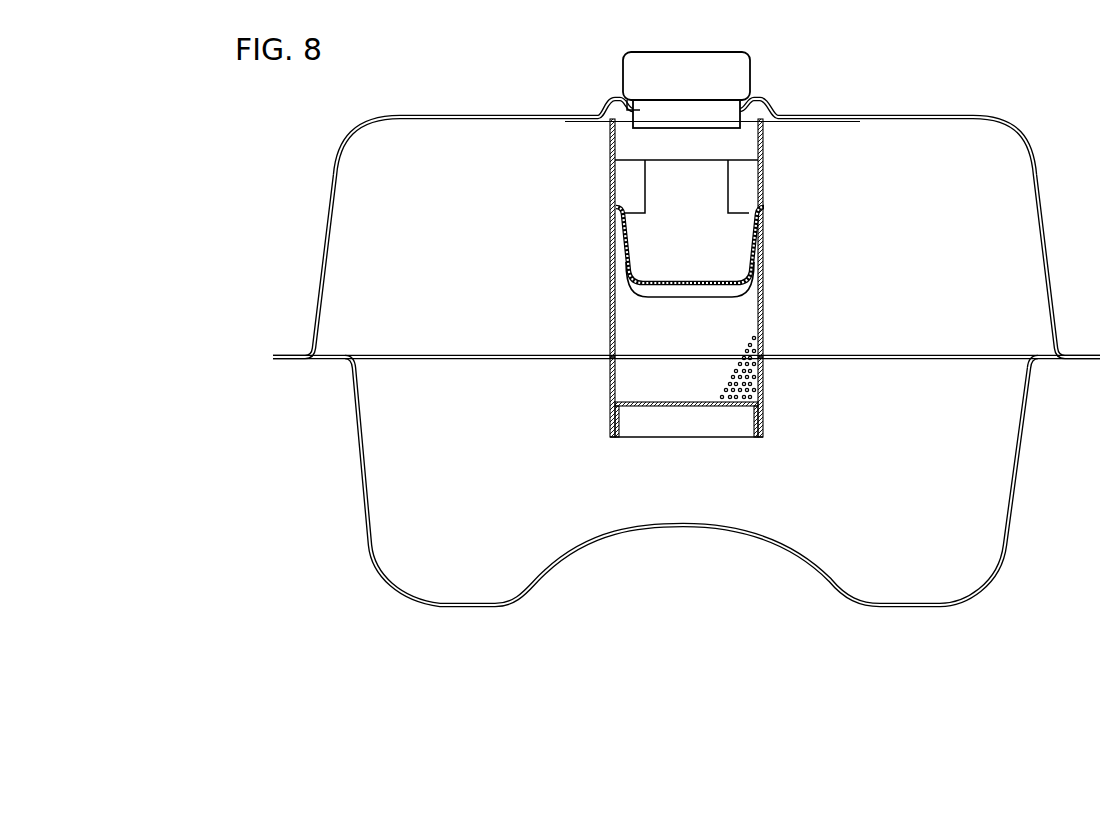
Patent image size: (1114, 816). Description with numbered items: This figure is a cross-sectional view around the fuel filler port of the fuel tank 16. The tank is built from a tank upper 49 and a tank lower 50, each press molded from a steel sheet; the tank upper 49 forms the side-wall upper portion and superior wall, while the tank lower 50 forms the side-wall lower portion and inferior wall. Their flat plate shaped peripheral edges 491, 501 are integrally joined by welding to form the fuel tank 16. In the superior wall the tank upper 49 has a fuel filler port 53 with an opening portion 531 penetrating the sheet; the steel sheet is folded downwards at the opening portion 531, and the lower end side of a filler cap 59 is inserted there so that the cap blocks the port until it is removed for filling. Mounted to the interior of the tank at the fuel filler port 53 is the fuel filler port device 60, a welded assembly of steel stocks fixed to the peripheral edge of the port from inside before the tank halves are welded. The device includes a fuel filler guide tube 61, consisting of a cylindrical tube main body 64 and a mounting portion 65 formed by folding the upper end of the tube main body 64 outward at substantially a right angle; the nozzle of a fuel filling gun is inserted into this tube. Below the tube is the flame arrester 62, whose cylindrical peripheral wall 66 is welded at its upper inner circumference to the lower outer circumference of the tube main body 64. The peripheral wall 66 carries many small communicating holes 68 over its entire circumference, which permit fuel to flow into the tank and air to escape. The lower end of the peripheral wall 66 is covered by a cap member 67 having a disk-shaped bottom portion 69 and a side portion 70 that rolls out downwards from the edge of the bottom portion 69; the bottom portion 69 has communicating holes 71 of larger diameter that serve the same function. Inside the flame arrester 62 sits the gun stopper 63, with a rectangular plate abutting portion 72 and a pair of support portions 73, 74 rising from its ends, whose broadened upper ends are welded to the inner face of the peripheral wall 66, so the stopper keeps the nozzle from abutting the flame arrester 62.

The fuel tank 16 is at (693, 306).
The tank upper 49 is at (1048, 228).
The peripheral edge 491 is at (1085, 355).
The tank lower 50 is at (1012, 476).
The peripheral edge 501 is at (1084, 360).
The fuel filler port 53 is at (764, 100).
The opening portion 531 is at (637, 108).
The filler cap 59 is at (697, 62).
The fuel filler port device 60 is at (683, 300).
The fuel filler guide tube 61 is at (722, 238).
The flame arrester 62 is at (618, 409).
The gun stopper 63 is at (642, 308).
The tube main body 64 is at (762, 140).
The mounting portion 65 is at (805, 121).
The peripheral wall 66 is at (608, 368).
The cap member 67 is at (635, 430).
The communicating holes 68 is at (764, 368).
The bottom portion 69 is at (625, 398).
The side portion 70 is at (612, 424).
The communicating holes 71 is at (663, 406).
The abutting portion 72 is at (737, 292).
The support portion 73 is at (755, 252).
The support portion 74 is at (620, 244).